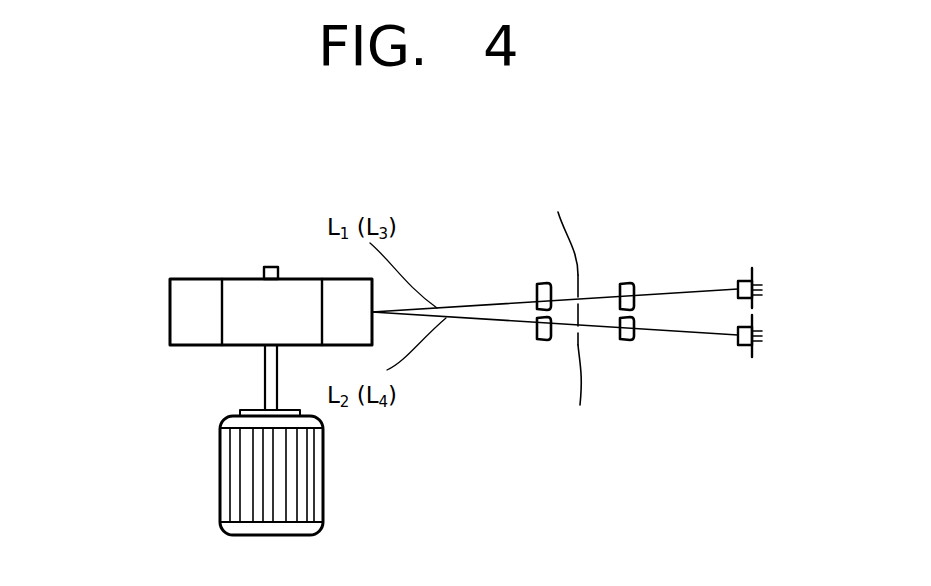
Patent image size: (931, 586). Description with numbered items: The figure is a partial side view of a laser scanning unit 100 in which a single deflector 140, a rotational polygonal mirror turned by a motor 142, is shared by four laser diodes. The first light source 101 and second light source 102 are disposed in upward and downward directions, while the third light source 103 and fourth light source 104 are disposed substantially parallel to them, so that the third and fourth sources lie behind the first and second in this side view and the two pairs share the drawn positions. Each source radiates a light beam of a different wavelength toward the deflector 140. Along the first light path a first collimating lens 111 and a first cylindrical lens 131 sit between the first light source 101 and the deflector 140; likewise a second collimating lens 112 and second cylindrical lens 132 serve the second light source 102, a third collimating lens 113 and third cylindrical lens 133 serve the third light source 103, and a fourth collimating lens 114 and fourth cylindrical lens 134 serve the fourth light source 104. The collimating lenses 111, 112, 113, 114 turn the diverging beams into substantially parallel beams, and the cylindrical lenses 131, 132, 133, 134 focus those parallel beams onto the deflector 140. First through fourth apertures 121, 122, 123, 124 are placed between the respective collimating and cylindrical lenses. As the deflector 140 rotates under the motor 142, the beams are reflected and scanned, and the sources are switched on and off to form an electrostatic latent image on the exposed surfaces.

The laser scanning unit 100 is at (97, 253).
The first light source 101 is at (768, 259).
The second light source 102 is at (773, 360).
The third light source 103 is at (752, 275).
The fourth light source 104 is at (752, 350).
The first collimating lens 111 is at (636, 263).
The second collimating lens 112 is at (638, 358).
The third collimating lens 113 is at (633, 281).
The fourth collimating lens 114 is at (630, 343).
The first aperture 121 is at (568, 263).
The second aperture 122 is at (576, 392).
The third aperture 123 is at (568, 263).
The fourth aperture 124 is at (576, 392).
The first cylindrical lens 131 is at (494, 271).
The second cylindrical lens 132 is at (491, 358).
The third cylindrical lens 133 is at (537, 286).
The fourth cylindrical lens 134 is at (538, 343).
The deflector 140 is at (200, 278).
The motor 142 is at (220, 477).